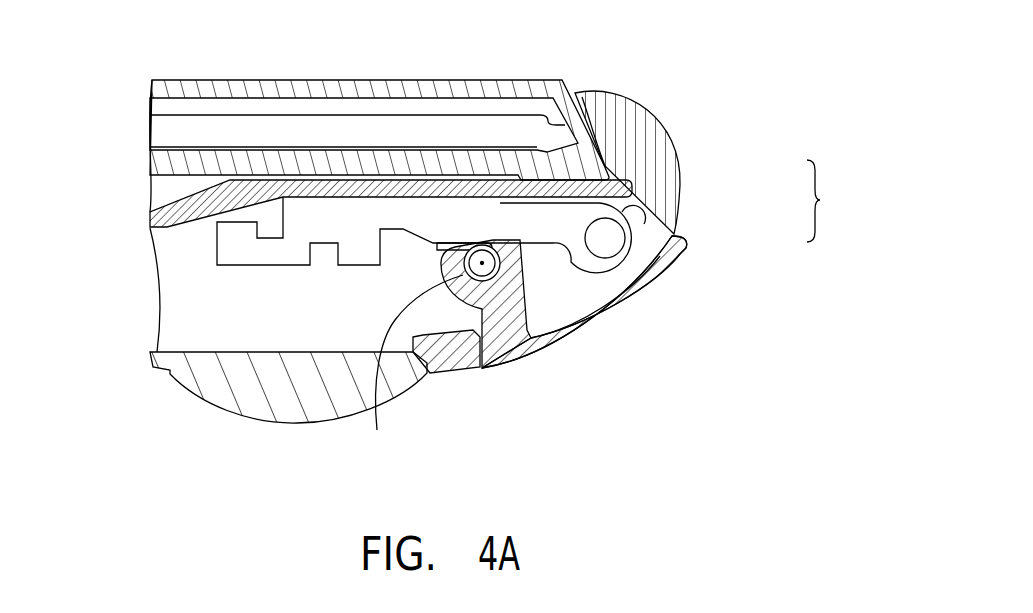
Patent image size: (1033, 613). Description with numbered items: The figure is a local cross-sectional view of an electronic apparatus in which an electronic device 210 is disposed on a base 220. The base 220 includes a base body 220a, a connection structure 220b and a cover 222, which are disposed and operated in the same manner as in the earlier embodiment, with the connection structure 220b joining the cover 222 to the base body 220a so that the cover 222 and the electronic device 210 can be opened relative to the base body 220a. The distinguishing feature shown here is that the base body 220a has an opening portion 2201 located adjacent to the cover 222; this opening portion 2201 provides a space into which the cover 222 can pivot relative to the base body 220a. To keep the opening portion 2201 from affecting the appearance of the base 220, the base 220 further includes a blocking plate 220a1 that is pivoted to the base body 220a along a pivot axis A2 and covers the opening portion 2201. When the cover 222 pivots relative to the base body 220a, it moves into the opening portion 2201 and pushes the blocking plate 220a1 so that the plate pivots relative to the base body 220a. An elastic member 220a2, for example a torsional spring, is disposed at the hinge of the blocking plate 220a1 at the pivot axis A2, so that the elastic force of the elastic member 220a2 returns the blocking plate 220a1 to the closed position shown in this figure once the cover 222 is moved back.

The electronic device 210 is at (353, 95).
The pivot axis A2 is at (482, 260).
The cover 222 is at (628, 137).
The base 220 is at (838, 201).
The connection structure 220b is at (698, 169).
The base body 220a is at (638, 295).
The blocking plate 220a1 is at (617, 303).
The elastic member 220a2 is at (403, 375).
The opening portion 2201 is at (566, 228).